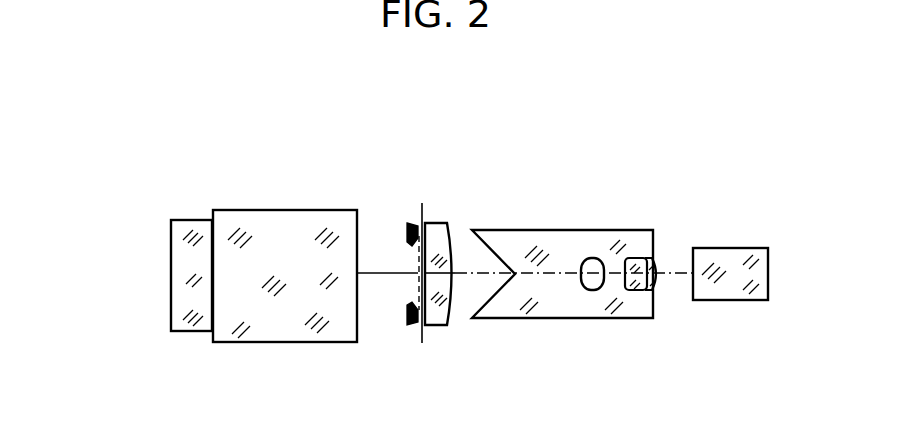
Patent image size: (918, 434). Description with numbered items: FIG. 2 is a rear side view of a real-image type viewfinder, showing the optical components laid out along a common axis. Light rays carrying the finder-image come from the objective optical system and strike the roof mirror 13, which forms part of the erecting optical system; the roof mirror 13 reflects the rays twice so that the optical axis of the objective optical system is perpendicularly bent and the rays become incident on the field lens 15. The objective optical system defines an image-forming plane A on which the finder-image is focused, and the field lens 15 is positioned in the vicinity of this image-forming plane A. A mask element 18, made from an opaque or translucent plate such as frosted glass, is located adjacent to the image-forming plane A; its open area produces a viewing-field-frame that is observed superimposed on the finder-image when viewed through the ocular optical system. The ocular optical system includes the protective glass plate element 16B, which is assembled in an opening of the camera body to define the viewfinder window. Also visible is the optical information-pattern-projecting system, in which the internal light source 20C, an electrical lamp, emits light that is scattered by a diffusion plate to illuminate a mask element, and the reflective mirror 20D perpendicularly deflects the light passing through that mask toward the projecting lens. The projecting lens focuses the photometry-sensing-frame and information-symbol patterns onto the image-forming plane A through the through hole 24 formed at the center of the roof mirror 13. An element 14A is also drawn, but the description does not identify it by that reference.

The light source 14A is at (170, 273).
The protective glass plate element 16B is at (282, 325).
The field lens 15 is at (438, 230).
The mask element 18 is at (413, 327).
The image-forming plane A is at (424, 335).
The roof mirror 13 is at (570, 243).
The through hole 24 is at (594, 292).
The reflective mirror 20D is at (660, 262).
The internal light source 20C is at (733, 288).